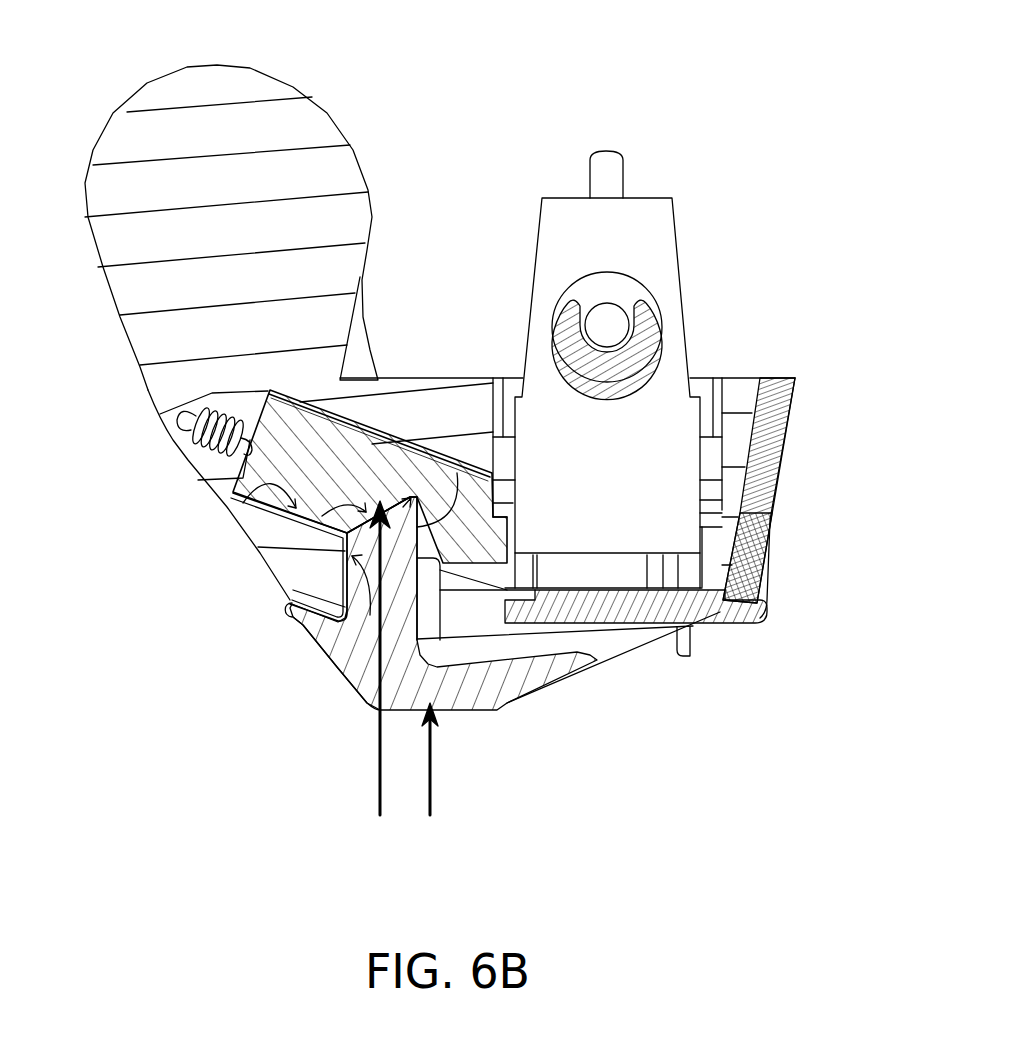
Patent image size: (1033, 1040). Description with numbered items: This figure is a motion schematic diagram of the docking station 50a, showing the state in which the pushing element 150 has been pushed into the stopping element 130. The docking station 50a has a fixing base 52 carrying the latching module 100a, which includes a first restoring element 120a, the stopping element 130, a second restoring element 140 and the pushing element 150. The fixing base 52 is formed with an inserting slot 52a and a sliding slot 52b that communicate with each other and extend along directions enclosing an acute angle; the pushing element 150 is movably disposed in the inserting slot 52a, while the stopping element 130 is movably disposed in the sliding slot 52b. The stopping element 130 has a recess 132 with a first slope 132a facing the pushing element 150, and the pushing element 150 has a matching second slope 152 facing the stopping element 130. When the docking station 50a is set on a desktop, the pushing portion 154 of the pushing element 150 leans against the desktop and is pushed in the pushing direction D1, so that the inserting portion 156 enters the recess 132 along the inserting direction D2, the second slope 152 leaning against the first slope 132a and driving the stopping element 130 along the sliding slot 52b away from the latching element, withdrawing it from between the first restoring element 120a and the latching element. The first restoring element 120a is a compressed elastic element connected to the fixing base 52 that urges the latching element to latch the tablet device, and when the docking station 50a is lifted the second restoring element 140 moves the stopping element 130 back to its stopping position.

The latching module 100a is at (665, 88).
The fixing base 52 is at (145, 293).
The inserting slot 52a is at (330, 653).
The sliding slot 52b is at (260, 477).
The docking station 50a is at (117, 458).
The first restoring element 120a is at (662, 342).
The stopping element 130 is at (393, 473).
The first slope 132a is at (454, 472).
The recess 132 is at (379, 439).
The second restoring element 140 is at (203, 462).
The pushing element 150 is at (560, 702).
The second slope 152 is at (310, 556).
The pushing portion 154 is at (508, 685).
The inserting portion 156 is at (378, 682).
The pushing direction D1 is at (451, 771).
The inserting direction D2 is at (363, 670).